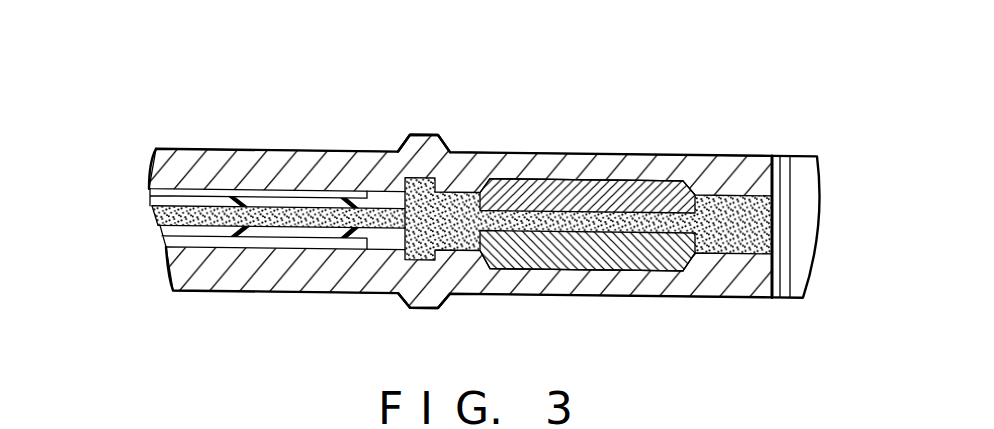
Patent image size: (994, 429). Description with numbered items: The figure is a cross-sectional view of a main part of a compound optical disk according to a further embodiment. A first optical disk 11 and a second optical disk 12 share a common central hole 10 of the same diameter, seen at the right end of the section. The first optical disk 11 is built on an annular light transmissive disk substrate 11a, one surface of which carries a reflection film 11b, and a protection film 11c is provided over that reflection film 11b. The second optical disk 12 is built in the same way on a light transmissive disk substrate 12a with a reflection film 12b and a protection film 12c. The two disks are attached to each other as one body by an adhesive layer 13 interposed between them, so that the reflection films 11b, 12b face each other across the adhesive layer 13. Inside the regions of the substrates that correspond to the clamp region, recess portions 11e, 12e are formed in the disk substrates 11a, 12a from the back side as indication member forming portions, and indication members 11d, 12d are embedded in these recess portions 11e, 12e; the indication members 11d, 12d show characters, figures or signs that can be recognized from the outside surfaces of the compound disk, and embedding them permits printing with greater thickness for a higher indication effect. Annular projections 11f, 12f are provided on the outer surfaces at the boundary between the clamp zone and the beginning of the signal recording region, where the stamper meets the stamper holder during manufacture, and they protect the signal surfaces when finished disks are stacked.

The central hole 10 is at (817, 213).
The first optical disk 11 is at (125, 145).
The light transmissive disk substrate 11a is at (186, 150).
The reflection film 11b is at (248, 190).
The protection film 11c is at (305, 204).
The indication member 11d is at (527, 193).
The recess portion 11e is at (613, 172).
The annular projection 11f is at (423, 135).
The second optical disk 12 is at (125, 223).
The light transmissive disk substrate 12a is at (195, 283).
The reflection film 12b is at (250, 246).
The protection film 12c is at (318, 234).
The indication member 12d is at (527, 258).
The recess portion 12e is at (625, 270).
The annular projection 12f is at (420, 310).
The adhesive layer 13 is at (720, 213).